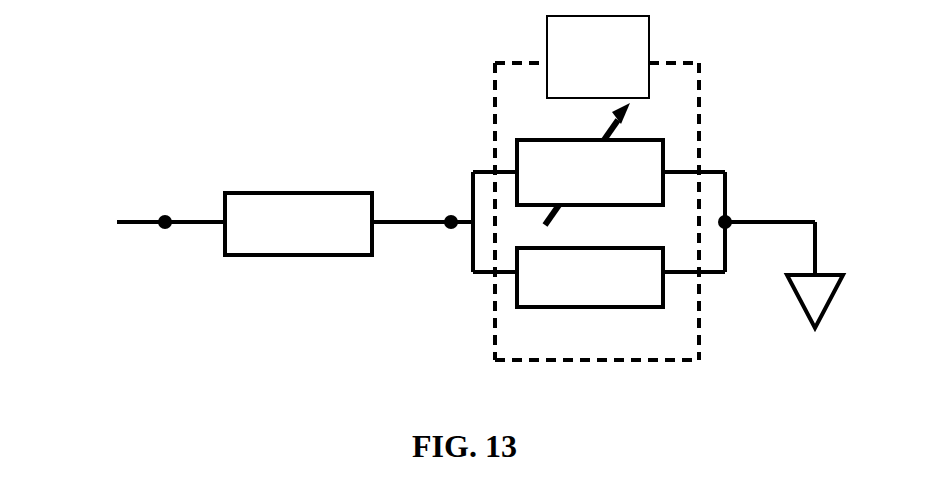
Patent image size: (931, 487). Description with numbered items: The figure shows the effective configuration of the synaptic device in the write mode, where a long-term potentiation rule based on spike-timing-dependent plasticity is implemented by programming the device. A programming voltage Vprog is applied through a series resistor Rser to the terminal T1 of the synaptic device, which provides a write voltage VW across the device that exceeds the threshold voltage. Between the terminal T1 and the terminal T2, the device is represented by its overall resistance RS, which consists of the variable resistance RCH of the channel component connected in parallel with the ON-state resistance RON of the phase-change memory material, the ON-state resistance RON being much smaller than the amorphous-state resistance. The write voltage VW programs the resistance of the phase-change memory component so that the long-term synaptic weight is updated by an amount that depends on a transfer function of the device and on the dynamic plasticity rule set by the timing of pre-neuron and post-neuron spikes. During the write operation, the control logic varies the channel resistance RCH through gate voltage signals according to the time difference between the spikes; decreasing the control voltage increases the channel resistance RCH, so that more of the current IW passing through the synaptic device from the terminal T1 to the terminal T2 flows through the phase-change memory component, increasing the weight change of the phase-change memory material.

The programming voltage Vprog is at (165, 236).
The series resistor Rser is at (298, 225).
The terminal T1 is at (451, 219).
The write voltage VW is at (451, 236).
The variable resistance of the channel component RCH is at (590, 174).
The ON-state resistance RON is at (590, 279).
The overall resistance RS is at (597, 120).
The terminal T2 is at (740, 215).
The current IW is at (764, 212).